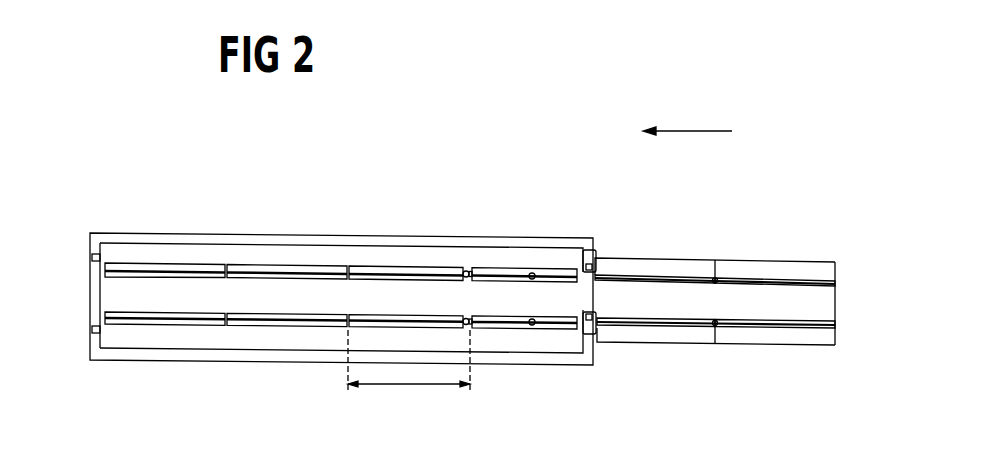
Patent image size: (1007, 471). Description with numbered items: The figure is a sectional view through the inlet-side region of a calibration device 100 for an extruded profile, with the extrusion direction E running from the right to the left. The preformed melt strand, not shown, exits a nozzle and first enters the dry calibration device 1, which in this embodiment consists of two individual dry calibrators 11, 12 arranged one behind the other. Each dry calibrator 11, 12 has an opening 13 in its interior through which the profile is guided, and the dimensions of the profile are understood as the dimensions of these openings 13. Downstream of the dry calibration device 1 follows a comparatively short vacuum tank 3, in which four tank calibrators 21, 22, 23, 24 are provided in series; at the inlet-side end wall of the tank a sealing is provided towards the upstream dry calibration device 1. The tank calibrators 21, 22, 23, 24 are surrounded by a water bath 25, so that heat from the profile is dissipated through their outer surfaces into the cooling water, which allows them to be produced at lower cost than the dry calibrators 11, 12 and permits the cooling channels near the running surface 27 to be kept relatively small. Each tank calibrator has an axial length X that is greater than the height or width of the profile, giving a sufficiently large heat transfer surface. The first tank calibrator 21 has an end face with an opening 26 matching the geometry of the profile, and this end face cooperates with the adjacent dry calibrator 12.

The calibration device 100 is at (372, 208).
The dry calibration device 1 is at (755, 250).
The vacuum tank 3 is at (150, 252).
The dry calibrator 11 is at (763, 335).
The dry calibrator 12 is at (663, 335).
The opening 13 is at (835, 303).
The tank calibrator 21 is at (530, 270).
The tank calibrator 22 is at (415, 270).
The tank calibrator 23 is at (280, 270).
The tank calibrator 24 is at (190, 273).
The water bath 25 is at (482, 260).
The opening 26 is at (585, 300).
The running surface 27 is at (120, 312).
The axial length X is at (409, 372).
The extrusion direction E is at (687, 120).